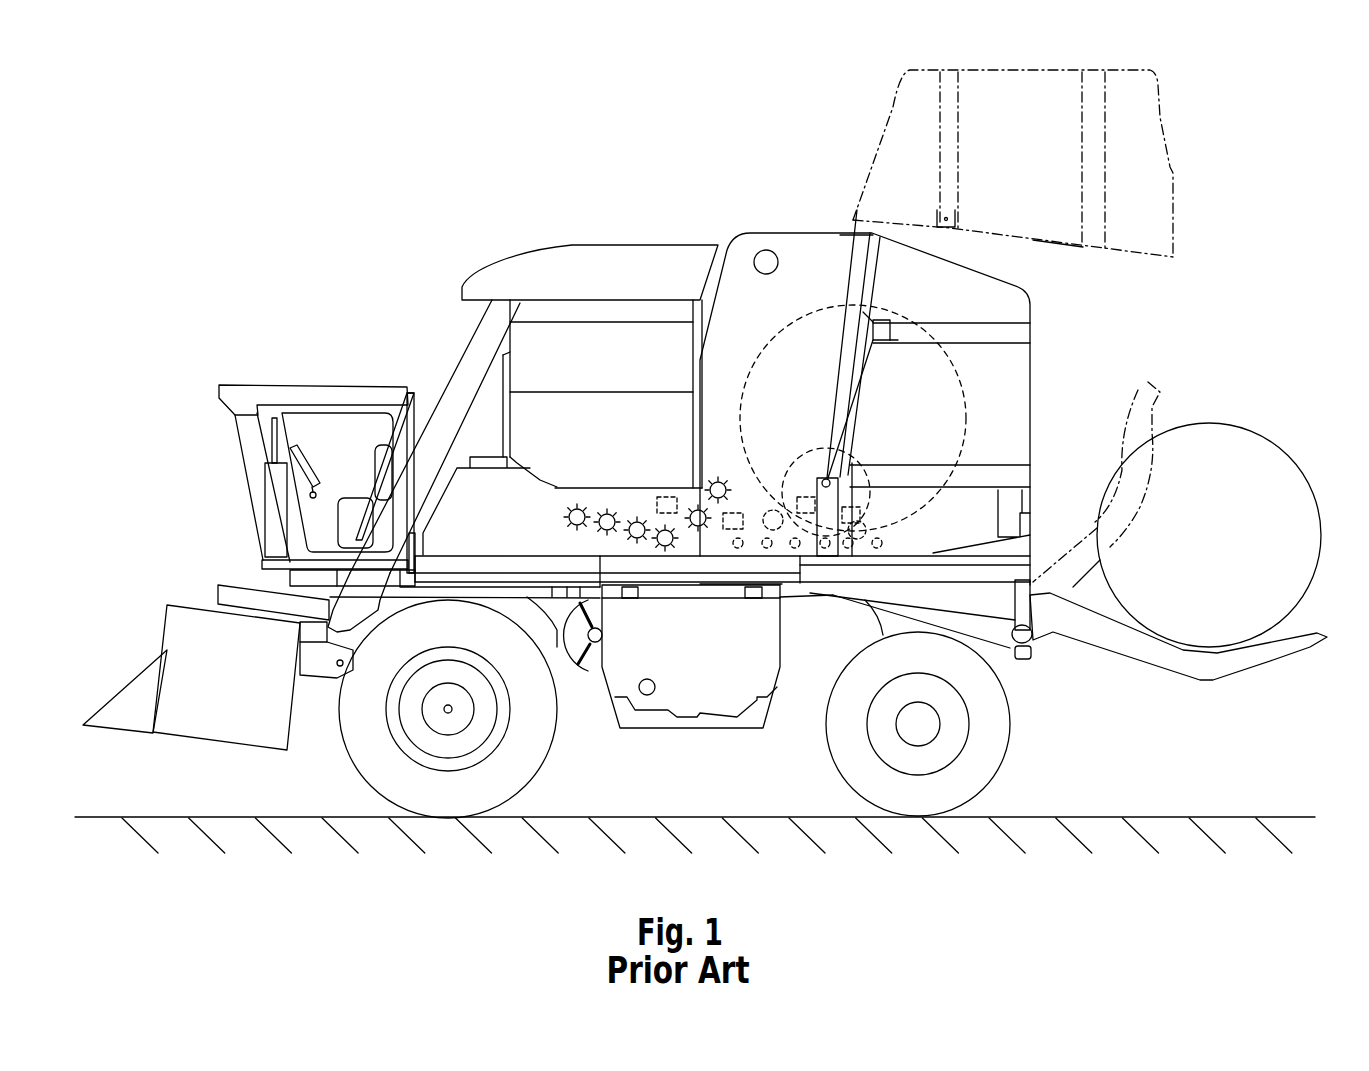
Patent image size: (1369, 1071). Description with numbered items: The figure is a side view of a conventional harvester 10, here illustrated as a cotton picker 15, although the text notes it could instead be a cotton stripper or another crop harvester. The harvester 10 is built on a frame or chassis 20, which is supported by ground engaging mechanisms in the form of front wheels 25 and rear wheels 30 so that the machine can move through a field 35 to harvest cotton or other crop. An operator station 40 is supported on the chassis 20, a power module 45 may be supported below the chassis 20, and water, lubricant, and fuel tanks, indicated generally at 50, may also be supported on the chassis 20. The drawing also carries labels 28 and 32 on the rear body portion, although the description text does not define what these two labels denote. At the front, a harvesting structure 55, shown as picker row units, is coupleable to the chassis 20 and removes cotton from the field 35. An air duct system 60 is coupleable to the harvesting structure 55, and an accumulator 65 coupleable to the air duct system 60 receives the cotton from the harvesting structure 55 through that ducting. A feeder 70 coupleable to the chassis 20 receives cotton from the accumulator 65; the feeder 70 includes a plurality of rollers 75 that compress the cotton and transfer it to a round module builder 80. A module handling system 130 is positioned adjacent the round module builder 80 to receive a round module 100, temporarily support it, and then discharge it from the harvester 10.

The harvester 10 is at (190, 182).
The cotton picker 15 is at (320, 312).
The chassis 20 is at (453, 578).
The front wheels 25 is at (520, 750).
The discharge opening 28 is at (1012, 280).
The rear wheels 30 is at (990, 729).
The engine compartment 32 is at (742, 313).
The field 35 is at (1163, 816).
The operator station 40 is at (277, 382).
The power module 45 is at (711, 663).
The tanks 50 is at (493, 483).
The harvesting structure 55 is at (225, 692).
The air duct system 60 is at (480, 345).
The accumulator 65 is at (582, 343).
The feeder 70 is at (640, 502).
The rollers 75 is at (604, 510).
The round module builder 80 is at (777, 186).
The round module 100 is at (1222, 378).
The module handling system 130 is at (1072, 540).